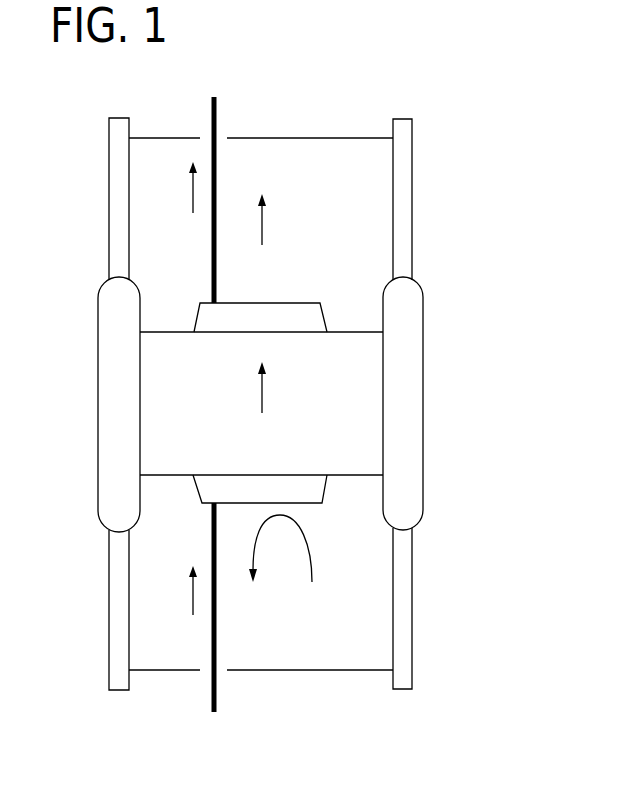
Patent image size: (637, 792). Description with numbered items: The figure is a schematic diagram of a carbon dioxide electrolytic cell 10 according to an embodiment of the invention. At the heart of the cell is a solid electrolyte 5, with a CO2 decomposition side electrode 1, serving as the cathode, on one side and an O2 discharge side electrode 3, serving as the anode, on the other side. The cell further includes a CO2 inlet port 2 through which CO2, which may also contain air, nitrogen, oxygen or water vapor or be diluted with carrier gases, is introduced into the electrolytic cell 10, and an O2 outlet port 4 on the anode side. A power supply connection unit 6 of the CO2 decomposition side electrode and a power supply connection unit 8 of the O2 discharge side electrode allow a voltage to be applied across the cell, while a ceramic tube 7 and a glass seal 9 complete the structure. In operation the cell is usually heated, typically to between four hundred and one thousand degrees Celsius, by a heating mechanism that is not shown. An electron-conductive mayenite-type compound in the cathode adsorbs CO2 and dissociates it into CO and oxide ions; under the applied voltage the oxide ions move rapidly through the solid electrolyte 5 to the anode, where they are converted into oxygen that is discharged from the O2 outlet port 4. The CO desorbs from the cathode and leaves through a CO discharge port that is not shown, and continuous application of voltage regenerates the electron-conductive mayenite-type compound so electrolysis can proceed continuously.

The CO2 decomposition side electrode 1 is at (312, 490).
The CO2 inlet port 2 is at (173, 677).
The O2 discharge side electrode 3 is at (313, 318).
The O2 outlet port 4 is at (168, 133).
The solid electrolyte 5 is at (350, 400).
The power supply connection unit of the CO2 decomposition side electrode 6 is at (216, 700).
The ceramic tube 7 is at (403, 634).
The power supply connection unit of the O2 discharge side electrode 8 is at (217, 108).
The glass seal 9 is at (403, 470).
The CO2 electrolytic cell 10 is at (456, 130).